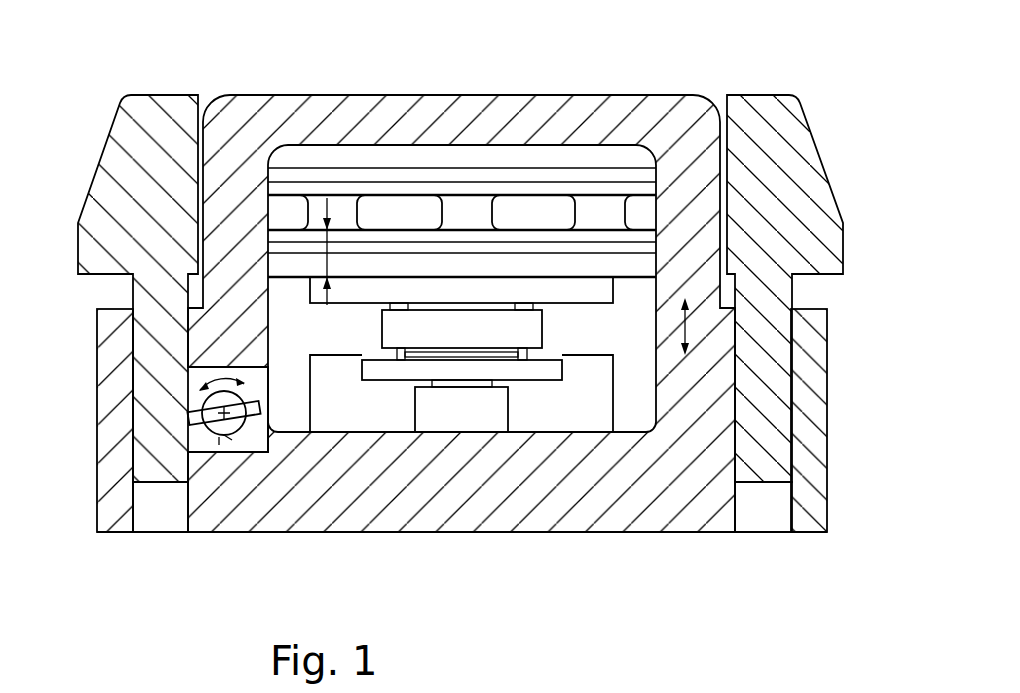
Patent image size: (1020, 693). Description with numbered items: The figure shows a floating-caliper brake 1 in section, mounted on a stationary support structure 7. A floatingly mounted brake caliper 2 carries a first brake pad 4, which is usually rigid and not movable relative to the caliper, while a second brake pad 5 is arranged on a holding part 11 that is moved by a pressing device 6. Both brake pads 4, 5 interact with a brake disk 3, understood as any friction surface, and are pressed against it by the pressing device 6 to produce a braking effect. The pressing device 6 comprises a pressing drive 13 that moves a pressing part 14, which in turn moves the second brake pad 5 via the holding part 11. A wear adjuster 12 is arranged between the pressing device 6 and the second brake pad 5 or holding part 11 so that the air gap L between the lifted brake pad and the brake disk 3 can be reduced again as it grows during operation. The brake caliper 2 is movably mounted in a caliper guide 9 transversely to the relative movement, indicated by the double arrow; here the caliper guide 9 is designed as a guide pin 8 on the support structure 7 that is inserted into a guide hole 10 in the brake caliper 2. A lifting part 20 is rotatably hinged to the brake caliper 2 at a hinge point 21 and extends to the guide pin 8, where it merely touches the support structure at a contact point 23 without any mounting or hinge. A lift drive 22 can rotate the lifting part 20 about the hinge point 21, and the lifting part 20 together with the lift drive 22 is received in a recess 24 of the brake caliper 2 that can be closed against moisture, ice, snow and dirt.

The floating-caliper brake 1 is at (447, 573).
The brake caliper 2 is at (670, 132).
The brake disk 3 is at (577, 213).
The first brake pad 4 is at (437, 160).
The second brake pad 5 is at (637, 268).
The pressing device 6 is at (588, 397).
The support structure 7 is at (132, 135).
The guide pin 8 is at (165, 362).
The caliper guide 9 is at (120, 375).
The guide hole 10 is at (135, 500).
The holding part 11 is at (498, 287).
The wear adjuster 12 is at (435, 332).
The pressing drive 13 is at (453, 403).
The pressing part 14 is at (522, 372).
The lifting part 20 is at (219, 445).
The hinge point 21 is at (225, 415).
The lift drive 22 is at (232, 440).
The contact point 23 is at (260, 402).
The recess 24 is at (268, 452).
The air gap L is at (327, 248).